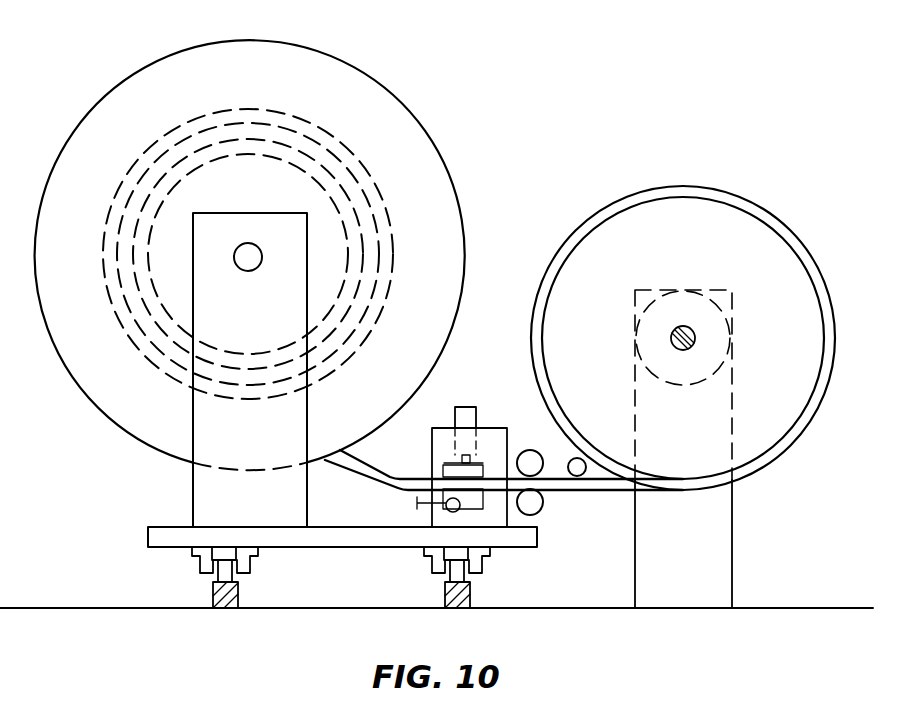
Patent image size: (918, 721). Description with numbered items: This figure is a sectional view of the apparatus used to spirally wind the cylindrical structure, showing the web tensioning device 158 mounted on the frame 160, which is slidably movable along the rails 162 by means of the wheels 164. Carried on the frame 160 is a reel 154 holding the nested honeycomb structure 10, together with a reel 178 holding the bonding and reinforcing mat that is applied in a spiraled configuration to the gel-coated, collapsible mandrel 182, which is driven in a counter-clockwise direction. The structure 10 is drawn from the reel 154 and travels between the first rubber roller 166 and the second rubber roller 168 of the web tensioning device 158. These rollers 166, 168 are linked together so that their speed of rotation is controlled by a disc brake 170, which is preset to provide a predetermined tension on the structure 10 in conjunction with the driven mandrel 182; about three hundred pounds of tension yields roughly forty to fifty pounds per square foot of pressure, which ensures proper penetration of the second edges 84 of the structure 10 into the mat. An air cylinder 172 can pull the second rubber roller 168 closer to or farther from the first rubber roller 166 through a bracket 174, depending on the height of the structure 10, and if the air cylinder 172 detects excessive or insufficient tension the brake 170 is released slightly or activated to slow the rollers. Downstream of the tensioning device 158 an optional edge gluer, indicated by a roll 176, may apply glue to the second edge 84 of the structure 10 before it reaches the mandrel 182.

The reel 154 is at (420, 140).
The nested honeycomb structure 10 is at (365, 172).
The reel 178 is at (263, 314).
The collapsible mandrel 182 is at (722, 208).
The second edges 84 is at (375, 468).
The web tensioning device 158 is at (470, 417).
The air cylinder 172 is at (477, 417).
The bracket 174 is at (472, 497).
The disc brake 170 is at (445, 508).
The first rubber roller 166 is at (528, 450).
The second rubber roller 168 is at (543, 504).
The roll 176 is at (582, 458).
The frame 160 is at (318, 542).
The wheels 164 is at (203, 578).
The rails 162 is at (238, 594).